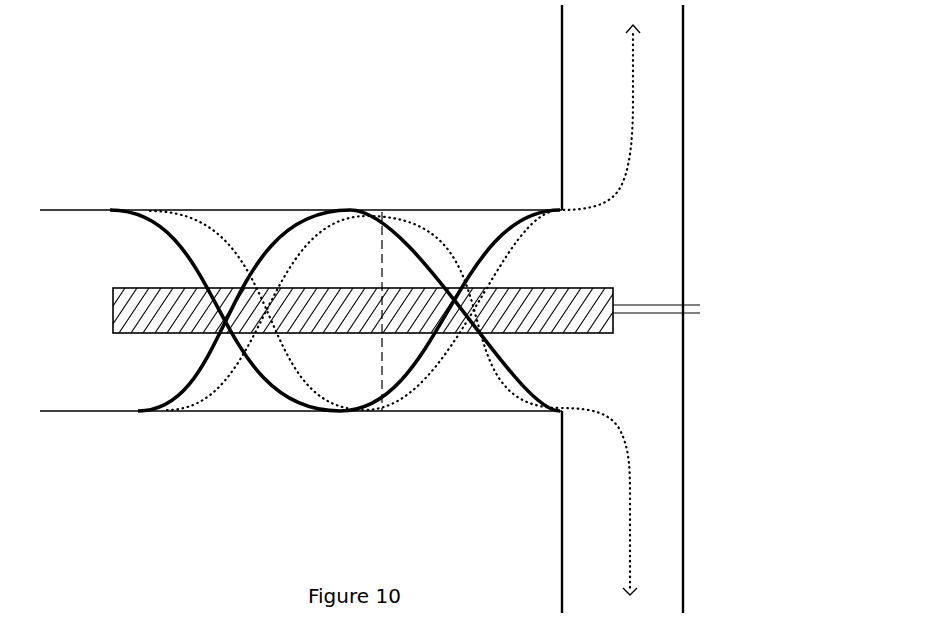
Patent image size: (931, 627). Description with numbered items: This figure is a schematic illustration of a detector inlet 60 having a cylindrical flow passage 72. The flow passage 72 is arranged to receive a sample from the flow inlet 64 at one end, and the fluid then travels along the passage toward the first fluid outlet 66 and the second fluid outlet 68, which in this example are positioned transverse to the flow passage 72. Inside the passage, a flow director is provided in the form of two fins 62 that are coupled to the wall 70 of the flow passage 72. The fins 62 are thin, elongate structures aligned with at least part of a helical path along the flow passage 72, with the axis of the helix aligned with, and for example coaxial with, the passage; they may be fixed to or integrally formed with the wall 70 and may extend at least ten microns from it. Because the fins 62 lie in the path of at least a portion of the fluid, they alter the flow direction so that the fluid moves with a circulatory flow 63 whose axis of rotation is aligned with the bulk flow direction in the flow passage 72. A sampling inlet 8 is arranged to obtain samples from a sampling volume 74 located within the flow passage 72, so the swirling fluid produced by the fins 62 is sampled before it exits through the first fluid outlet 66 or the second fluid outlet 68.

The sampling inlet 8 is at (693, 309).
The detector inlet 60 is at (326, 113).
The fins 62 is at (262, 248).
The circulatory flow 63 is at (237, 370).
The flow inlet 64 is at (55, 258).
The first fluid outlet 66 is at (645, 118).
The second fluid outlet 68 is at (657, 505).
The wall 70 is at (442, 208).
The flow passage 72 is at (382, 182).
The sampling volume 74 is at (132, 333).